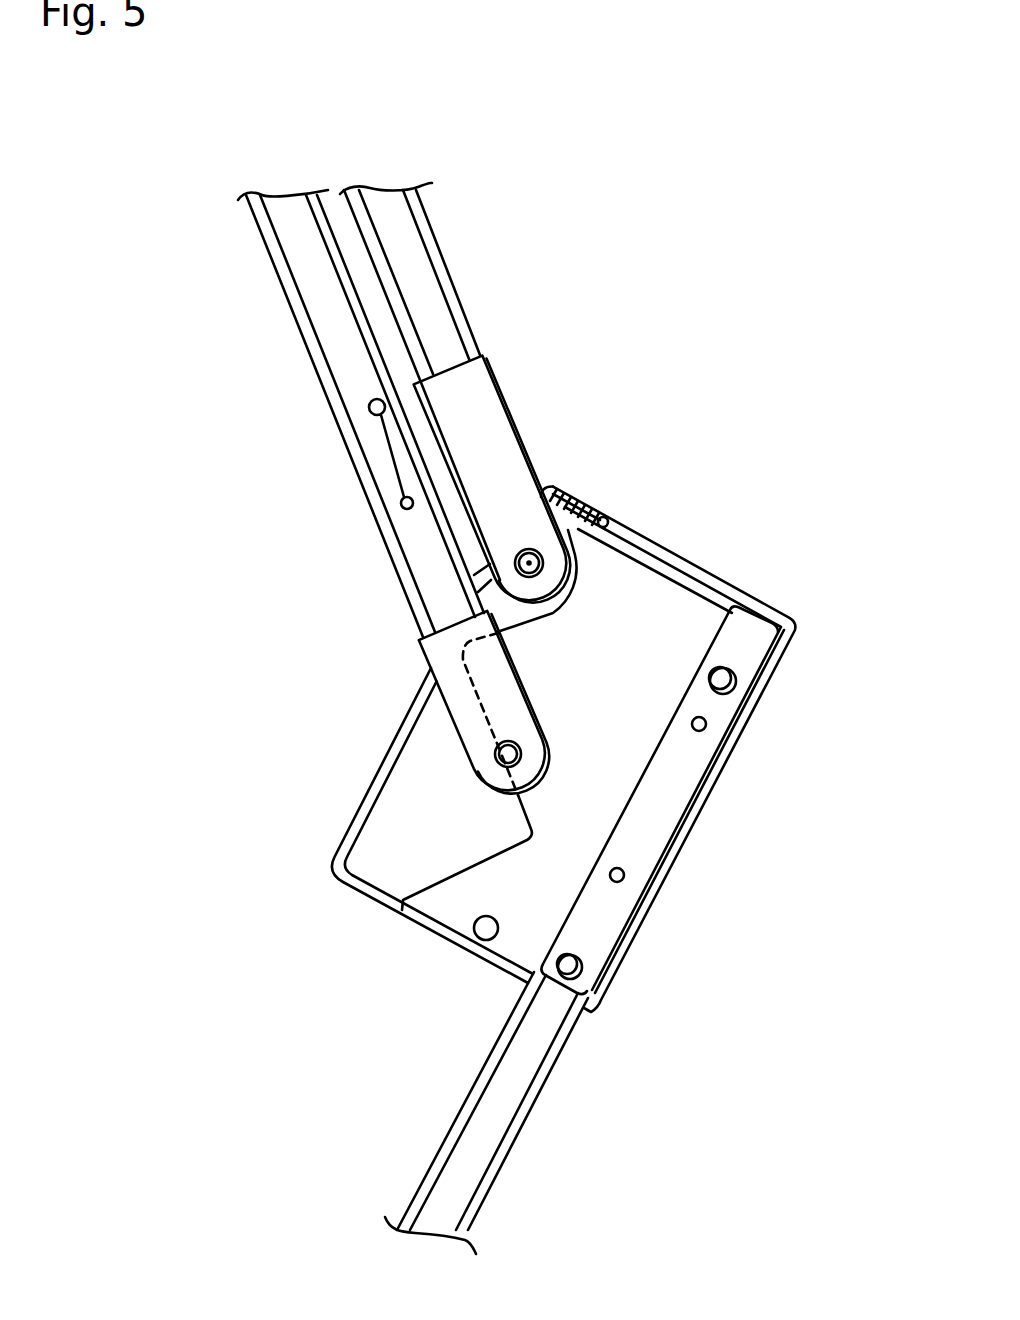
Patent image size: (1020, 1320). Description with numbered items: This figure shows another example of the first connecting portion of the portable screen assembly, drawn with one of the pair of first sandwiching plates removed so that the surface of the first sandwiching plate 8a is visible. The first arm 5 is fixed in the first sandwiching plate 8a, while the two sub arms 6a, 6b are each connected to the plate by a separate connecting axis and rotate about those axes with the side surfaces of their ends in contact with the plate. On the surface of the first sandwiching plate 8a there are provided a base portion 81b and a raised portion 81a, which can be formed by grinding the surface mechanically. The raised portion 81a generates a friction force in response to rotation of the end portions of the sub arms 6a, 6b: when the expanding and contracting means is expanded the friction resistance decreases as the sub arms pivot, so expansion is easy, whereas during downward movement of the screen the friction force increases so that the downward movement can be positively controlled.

The first arm 5 is at (462, 1180).
The sub arm 6a is at (333, 347).
The sub arm 6b is at (420, 278).
The first sandwiching plate 8a is at (647, 598).
The raised portion 81a is at (577, 800).
The base portion 81b is at (397, 810).